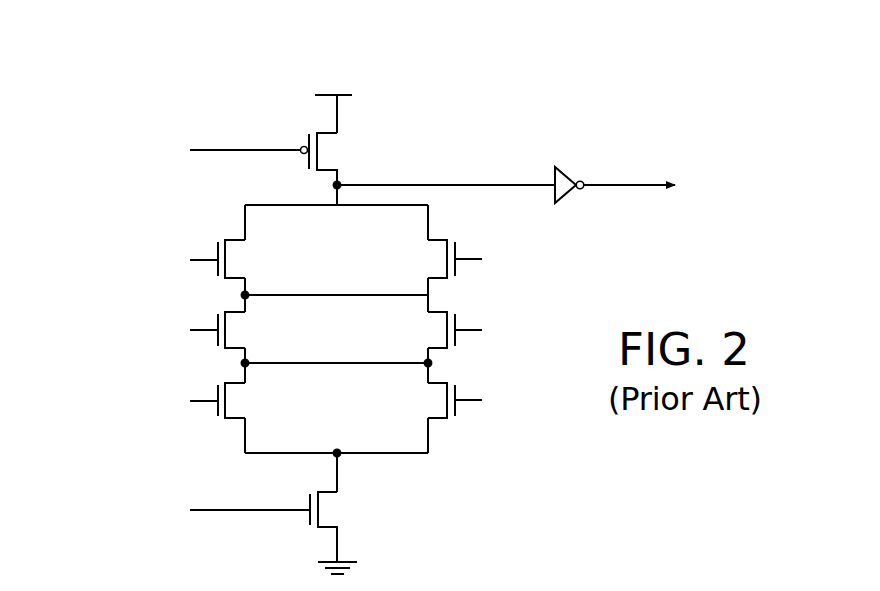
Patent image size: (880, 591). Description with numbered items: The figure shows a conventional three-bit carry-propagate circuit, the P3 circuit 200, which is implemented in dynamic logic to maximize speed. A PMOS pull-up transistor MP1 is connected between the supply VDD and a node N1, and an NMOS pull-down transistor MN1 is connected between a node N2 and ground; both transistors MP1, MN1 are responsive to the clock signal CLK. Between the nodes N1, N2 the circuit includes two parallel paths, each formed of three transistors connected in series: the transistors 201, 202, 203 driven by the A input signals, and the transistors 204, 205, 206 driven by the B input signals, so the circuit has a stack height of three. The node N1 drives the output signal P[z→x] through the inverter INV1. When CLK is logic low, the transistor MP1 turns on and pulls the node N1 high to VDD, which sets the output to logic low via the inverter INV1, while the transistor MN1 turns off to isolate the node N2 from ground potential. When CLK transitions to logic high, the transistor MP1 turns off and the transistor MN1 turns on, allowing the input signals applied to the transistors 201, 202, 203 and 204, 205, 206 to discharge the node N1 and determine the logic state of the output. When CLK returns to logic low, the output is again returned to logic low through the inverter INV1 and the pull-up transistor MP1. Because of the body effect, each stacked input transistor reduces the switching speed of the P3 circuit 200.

The P3 circuit 200 is at (168, 40).
The transistor 201 is at (240, 260).
The transistor 202 is at (238, 333).
The transistor 203 is at (242, 403).
The transistor 204 is at (433, 258).
The transistor 205 is at (433, 333).
The transistor 206 is at (433, 403).
The PMOS pull-up transistor MP1 is at (330, 150).
The NMOS pull-down transistor MN1 is at (337, 507).
The node N1 is at (343, 182).
The node N2 is at (330, 460).
The inverter INV1 is at (572, 170).